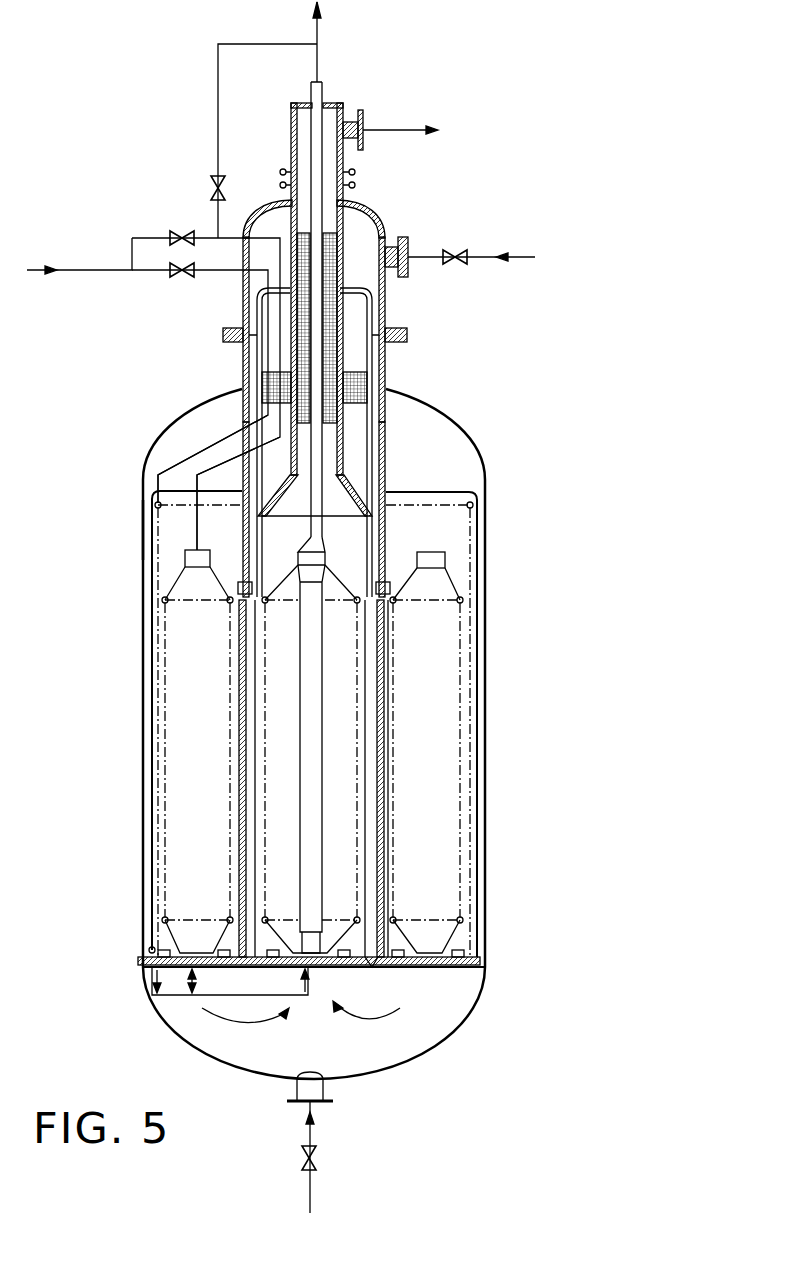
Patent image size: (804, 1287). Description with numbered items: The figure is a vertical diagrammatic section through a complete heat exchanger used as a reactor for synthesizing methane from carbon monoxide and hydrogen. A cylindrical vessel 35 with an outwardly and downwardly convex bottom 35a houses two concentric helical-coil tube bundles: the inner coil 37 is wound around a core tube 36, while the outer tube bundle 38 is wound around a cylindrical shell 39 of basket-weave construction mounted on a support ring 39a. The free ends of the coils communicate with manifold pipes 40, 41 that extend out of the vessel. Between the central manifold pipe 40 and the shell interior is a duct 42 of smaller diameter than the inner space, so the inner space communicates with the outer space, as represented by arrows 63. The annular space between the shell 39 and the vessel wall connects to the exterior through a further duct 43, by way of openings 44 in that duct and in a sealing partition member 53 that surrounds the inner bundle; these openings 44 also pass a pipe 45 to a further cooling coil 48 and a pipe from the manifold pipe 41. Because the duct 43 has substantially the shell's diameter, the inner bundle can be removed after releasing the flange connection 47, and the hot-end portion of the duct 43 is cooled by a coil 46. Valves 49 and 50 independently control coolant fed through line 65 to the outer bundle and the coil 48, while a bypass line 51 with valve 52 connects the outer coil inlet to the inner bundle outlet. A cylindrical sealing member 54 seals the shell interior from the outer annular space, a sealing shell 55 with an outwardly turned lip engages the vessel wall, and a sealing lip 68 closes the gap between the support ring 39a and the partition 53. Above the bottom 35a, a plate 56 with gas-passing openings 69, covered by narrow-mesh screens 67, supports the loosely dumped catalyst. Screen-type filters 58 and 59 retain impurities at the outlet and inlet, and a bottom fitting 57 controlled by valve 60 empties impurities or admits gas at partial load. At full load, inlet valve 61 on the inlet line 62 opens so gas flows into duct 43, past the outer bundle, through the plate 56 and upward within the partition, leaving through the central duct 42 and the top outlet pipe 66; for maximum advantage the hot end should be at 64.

The cylindrical vessel 35 is at (485, 615).
The bottom of the vessel 35a is at (462, 1028).
The core tube 36 is at (323, 682).
The inner coil 37 is at (352, 822).
The outer tube bundle 38 is at (437, 822).
The cylindrical shell 39 is at (383, 685).
The support ring 39a is at (380, 953).
The central manifold pipe 40 is at (317, 502).
The manifold pipe 41 is at (197, 518).
The duct 42 is at (333, 465).
The further duct 43 is at (388, 362).
The openings 44 is at (370, 437).
The pipe 45 is at (219, 438).
The coil 46 is at (357, 176).
The flange connection 47 is at (400, 330).
The further cooling coil 48 is at (143, 528).
The valve 49 is at (180, 282).
The valve 50 is at (186, 231).
The bypass line 51 is at (218, 98).
The selectively controlled valve 52 is at (210, 182).
The sealing partition member 53 is at (380, 472).
The cylindrical sealing member 54 is at (373, 757).
The sealing shell 55 is at (478, 538).
The plate 56 is at (397, 970).
The fitting 57 is at (325, 1085).
The screen-type filter 58 is at (330, 252).
The screen-type filter 59 is at (350, 408).
The valve 60 is at (315, 1160).
The inlet valve 61 is at (483, 222).
The inlet pipe 62 is at (514, 262).
The arrows 63 is at (360, 1017).
The hot end 64 is at (420, 102).
The line 65 is at (96, 272).
The vent pipe 66 is at (318, 32).
The narrow-mesh screens 67 is at (222, 952).
The sealing lip 68 is at (387, 958).
The gas-passing openings 69 is at (225, 968).